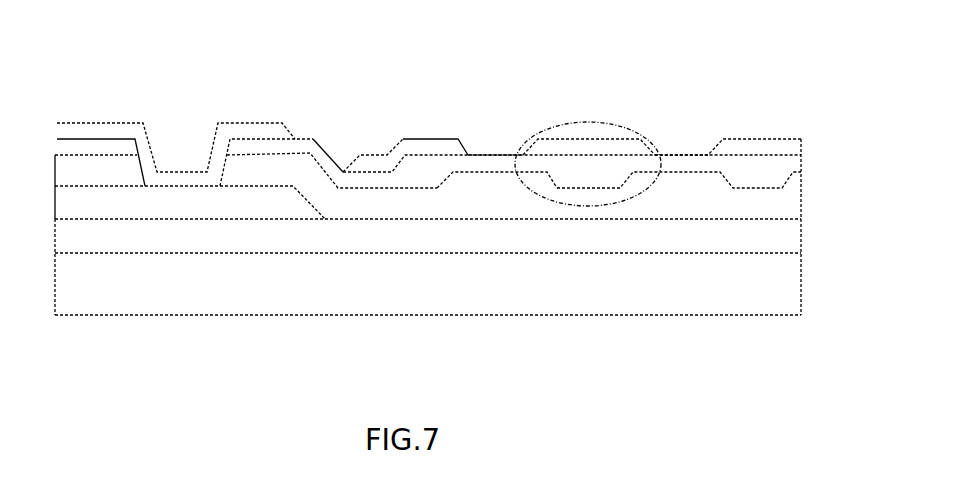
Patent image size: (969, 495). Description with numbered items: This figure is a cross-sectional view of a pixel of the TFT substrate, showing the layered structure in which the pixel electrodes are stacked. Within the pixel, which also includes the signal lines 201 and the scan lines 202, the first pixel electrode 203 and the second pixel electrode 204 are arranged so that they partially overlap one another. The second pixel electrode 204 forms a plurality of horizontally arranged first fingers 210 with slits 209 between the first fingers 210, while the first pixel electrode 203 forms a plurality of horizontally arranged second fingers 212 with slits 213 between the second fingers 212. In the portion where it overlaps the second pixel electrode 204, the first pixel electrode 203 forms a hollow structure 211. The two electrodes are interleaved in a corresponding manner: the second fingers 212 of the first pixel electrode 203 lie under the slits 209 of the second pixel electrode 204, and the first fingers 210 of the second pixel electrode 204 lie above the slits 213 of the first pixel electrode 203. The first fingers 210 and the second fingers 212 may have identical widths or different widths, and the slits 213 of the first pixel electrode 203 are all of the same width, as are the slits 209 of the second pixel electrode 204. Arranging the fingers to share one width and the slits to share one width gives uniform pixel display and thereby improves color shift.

The signal lines 201 is at (428, 227).
The scan lines 202 is at (184, 154).
The first pixel electrode 203 is at (544, 127).
The second fingers 212 is at (723, 177).
The second pixel electrode 204 is at (615, 110).
The first fingers 210 is at (607, 155).
The slits 209 is at (700, 142).
The hollow structure 211 is at (522, 150).
The slits 213 is at (588, 180).